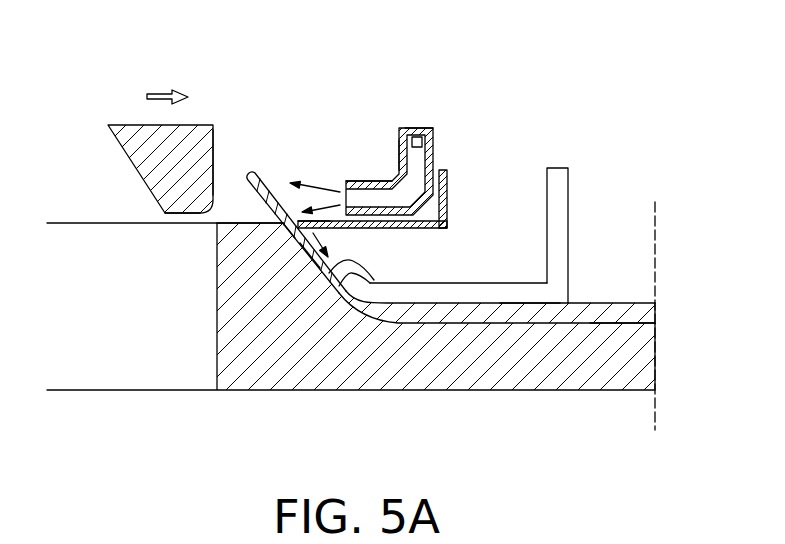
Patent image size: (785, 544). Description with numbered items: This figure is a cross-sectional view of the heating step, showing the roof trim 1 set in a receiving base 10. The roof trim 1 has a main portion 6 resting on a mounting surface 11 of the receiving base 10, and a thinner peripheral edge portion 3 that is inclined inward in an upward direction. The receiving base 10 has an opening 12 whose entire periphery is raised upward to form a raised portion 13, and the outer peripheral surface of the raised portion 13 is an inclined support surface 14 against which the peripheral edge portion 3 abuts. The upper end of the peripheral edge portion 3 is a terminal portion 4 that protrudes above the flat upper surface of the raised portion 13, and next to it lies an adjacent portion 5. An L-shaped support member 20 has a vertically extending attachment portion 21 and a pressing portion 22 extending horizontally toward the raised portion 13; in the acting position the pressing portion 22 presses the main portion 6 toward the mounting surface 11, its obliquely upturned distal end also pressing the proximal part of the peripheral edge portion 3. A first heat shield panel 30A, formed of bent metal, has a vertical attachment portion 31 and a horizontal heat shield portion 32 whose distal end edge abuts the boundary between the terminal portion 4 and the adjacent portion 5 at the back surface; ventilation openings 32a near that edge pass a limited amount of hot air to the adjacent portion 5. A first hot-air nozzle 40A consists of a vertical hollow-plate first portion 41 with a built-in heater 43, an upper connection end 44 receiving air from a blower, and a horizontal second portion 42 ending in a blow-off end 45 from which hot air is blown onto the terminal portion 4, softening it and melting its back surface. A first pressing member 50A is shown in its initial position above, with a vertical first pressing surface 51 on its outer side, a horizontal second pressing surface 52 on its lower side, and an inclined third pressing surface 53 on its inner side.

The roof trim 1 is at (594, 298).
The peripheral edge portion 3 is at (300, 263).
The terminal portion 4 is at (270, 187).
The adjacent portion 5 is at (284, 236).
The main portion 6 is at (528, 302).
The receiving base 10 is at (660, 352).
The mounting surface 11 is at (617, 322).
The opening 12 is at (142, 342).
The raised portion 13 is at (229, 222).
The support surface 14 is at (374, 280).
The support member 20 is at (495, 180).
The attachment portion 21 is at (568, 208).
The pressing portion 22 is at (500, 282).
The first heat shield panel 30A is at (410, 148).
The attachment portion 31 is at (447, 195).
The heat shield portion 32 is at (436, 231).
The ventilation opening 32a is at (316, 220).
The first hot-air nozzle 40A is at (390, 144).
The first portion 41 is at (398, 147).
The second portion 42 is at (367, 181).
The heater 43 is at (414, 137).
The connection end 44 is at (422, 128).
The blow-off end 45 is at (352, 198).
The first pressing member 50A is at (163, 126).
The first pressing surface 51 is at (215, 142).
The second pressing surface 52 is at (172, 216).
The third pressing surface 53 is at (130, 162).